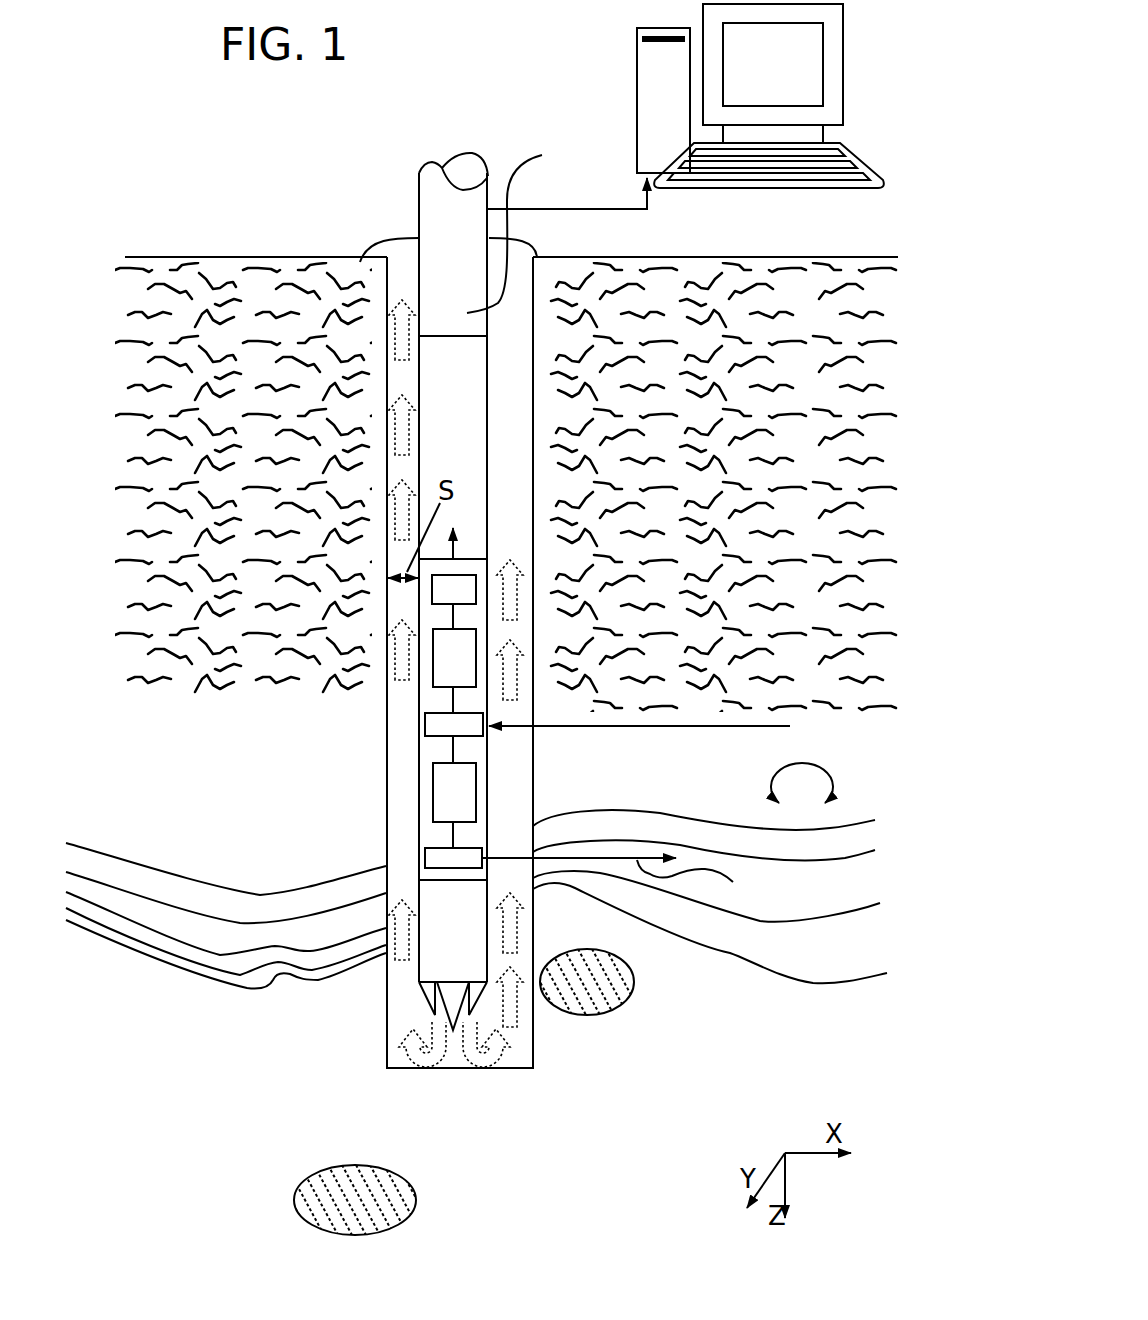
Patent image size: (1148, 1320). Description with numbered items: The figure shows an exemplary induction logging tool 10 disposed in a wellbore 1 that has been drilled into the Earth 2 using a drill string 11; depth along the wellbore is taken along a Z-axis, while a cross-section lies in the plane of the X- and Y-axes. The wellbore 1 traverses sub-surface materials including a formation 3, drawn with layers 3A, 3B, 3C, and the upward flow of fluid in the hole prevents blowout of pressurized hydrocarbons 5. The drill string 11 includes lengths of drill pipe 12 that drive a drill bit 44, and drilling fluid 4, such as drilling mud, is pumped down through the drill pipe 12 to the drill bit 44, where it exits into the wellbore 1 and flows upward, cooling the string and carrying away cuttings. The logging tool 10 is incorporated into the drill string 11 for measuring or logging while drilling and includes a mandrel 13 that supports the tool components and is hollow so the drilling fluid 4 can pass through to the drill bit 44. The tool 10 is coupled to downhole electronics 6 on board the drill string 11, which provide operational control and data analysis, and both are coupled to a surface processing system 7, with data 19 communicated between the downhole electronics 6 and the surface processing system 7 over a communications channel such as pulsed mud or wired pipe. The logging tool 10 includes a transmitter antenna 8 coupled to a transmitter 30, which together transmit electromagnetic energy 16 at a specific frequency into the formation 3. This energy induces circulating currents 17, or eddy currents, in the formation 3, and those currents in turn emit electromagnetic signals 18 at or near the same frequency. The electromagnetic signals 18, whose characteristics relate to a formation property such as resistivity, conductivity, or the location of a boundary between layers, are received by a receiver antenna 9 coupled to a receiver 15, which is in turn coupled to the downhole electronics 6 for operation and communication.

The wellbore 1 is at (382, 1050).
The Earth 2 is at (193, 283).
The formation 3 is at (860, 940).
The layer 3A is at (872, 833).
The layer 3B is at (872, 877).
The layer 3C is at (873, 932).
The drilling fluid 4 is at (405, 265).
The pressurized hydrocarbons 5 is at (600, 1003).
The downhole electronics 6 is at (465, 584).
The surface processing system 7 is at (839, 87).
The transmitter antenna 8 is at (442, 855).
The receiver antenna 9 is at (468, 720).
The induction logging tool 10 is at (408, 752).
The drill string 11 is at (418, 201).
The drill pipe 12 is at (517, 217).
The mandrel 13 is at (418, 813).
The receiver 15 is at (454, 658).
The electromagnetic energy 16 is at (624, 882).
The circulating currents 17 is at (832, 782).
The electromagnetic signals 18 is at (657, 727).
The data 19 is at (552, 208).
The transmitter 30 is at (454, 792).
The drill bit 44 is at (453, 1007).